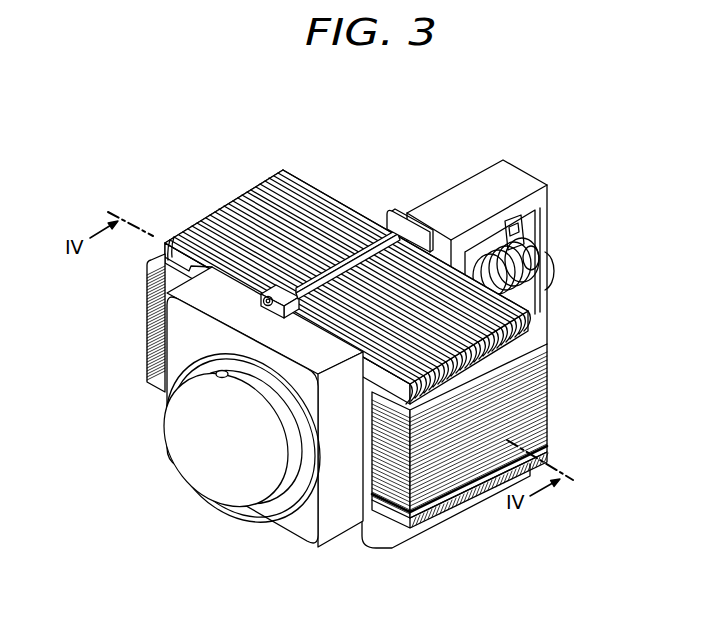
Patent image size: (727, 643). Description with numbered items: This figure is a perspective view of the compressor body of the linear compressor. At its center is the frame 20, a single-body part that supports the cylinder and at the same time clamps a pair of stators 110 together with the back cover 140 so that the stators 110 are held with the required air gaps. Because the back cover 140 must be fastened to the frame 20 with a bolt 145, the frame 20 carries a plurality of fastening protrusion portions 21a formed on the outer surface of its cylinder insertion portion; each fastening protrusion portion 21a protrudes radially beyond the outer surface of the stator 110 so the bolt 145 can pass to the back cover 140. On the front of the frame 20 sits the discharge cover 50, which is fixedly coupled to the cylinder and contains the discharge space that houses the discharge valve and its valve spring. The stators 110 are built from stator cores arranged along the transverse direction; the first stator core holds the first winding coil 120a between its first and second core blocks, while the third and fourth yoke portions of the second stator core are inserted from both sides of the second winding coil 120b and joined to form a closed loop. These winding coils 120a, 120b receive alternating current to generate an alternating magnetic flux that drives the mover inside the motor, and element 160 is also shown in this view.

The frame 20 is at (335, 513).
The fastening protrusion portion 21a is at (277, 293).
The discharge cover 50 is at (217, 468).
The stator 110 is at (322, 203).
The first winding coil 120a is at (150, 307).
The second winding coil 120b is at (533, 388).
The back cover 140 is at (475, 187).
The bolt 145 is at (373, 242).
The coil assembly 160 is at (520, 265).